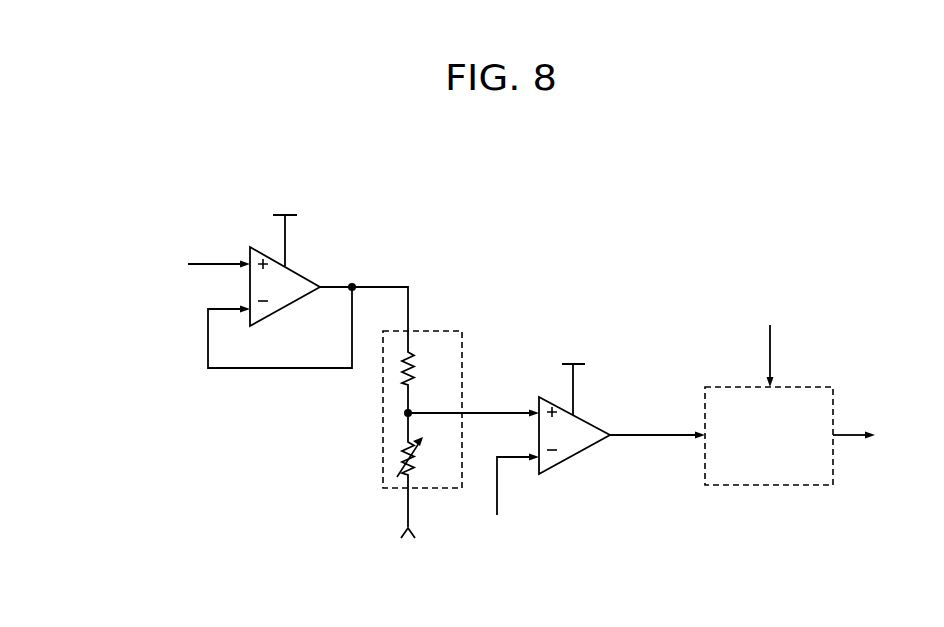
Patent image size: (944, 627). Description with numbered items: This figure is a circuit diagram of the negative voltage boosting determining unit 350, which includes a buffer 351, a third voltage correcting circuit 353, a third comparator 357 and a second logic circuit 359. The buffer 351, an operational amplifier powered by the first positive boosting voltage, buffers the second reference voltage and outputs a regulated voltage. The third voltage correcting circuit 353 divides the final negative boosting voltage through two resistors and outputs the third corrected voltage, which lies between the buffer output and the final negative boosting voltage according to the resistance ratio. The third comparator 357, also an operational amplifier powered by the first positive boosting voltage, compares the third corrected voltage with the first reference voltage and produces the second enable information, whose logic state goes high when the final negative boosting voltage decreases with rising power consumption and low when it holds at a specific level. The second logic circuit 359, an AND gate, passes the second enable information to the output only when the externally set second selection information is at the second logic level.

The negative voltage boosting determining unit 350 is at (745, 247).
The buffer 351 is at (287, 310).
The third voltage correcting circuit 353 is at (428, 331).
The third comparator 357 is at (575, 457).
The second logic circuit 359 is at (770, 487).